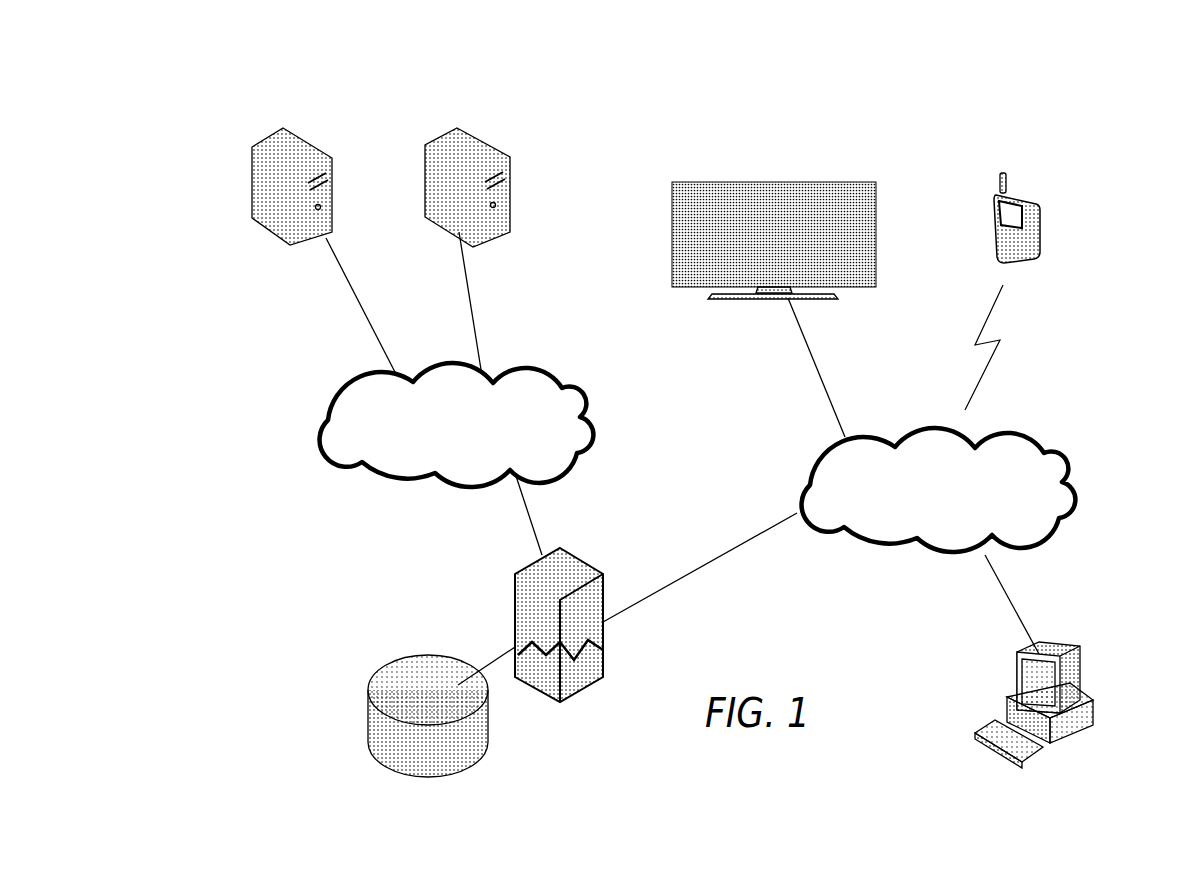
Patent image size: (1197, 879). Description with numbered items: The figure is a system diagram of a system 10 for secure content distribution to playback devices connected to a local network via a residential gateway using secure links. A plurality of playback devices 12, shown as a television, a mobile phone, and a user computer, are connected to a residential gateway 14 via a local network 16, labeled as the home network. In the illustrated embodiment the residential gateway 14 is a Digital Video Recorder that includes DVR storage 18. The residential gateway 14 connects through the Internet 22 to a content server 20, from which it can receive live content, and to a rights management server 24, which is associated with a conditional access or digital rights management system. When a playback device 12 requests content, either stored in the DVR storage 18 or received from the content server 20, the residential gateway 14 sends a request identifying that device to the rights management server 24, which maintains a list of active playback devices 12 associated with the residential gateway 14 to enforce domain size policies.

The system 10 is at (1065, 137).
The playback devices 12 is at (718, 182).
The residential gateway 14 is at (587, 560).
The local network 16 is at (1042, 447).
The DVR storage 18 is at (383, 667).
The content server 20 is at (457, 130).
The Internet 22 is at (313, 425).
The rights management server 24 is at (282, 153).